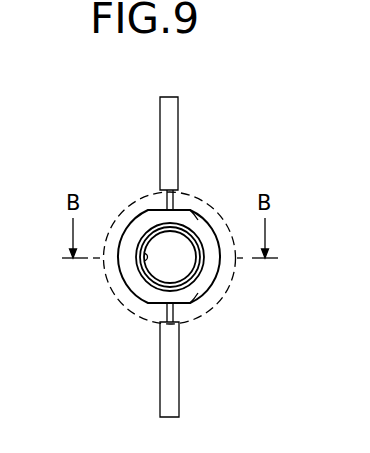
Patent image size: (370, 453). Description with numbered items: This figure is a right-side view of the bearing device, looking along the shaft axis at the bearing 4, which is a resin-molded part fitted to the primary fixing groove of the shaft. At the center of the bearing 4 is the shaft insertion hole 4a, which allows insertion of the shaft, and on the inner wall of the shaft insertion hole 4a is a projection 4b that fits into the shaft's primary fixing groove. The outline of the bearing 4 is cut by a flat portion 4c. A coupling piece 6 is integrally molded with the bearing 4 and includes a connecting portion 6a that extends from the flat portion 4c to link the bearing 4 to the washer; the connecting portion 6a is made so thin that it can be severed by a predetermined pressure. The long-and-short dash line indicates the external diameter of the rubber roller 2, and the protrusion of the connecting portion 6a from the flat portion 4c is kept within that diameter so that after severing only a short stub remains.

The rubber roller 2 is at (127, 318).
The bearing 4 is at (133, 293).
The shaft insertion hole 4a is at (158, 229).
The projection 4b is at (148, 256).
The flat portion 4c is at (190, 209).
The coupling piece 6 is at (178, 108).
The connecting portion 6a is at (174, 205).